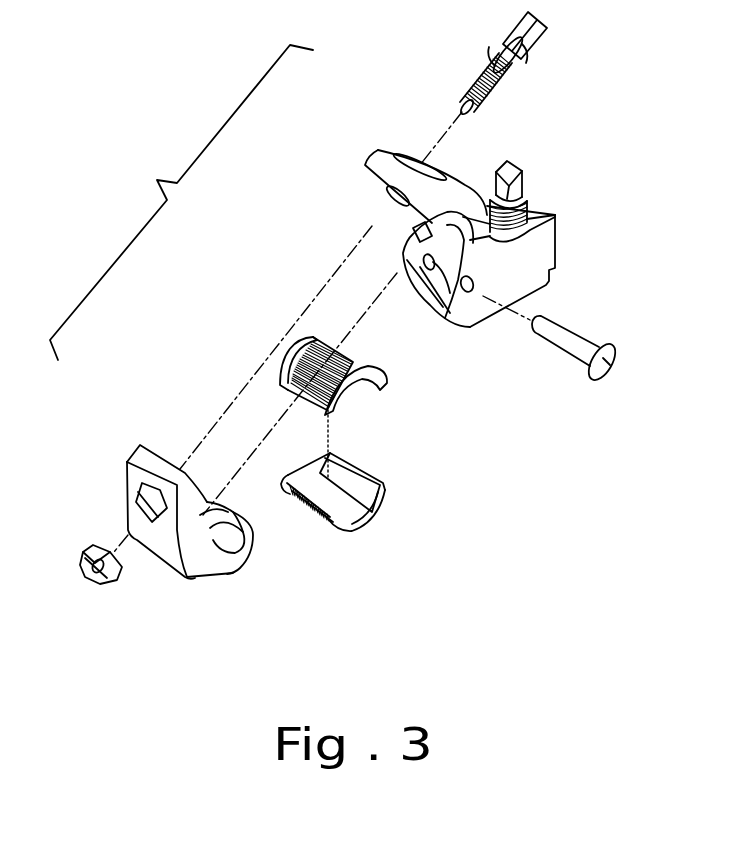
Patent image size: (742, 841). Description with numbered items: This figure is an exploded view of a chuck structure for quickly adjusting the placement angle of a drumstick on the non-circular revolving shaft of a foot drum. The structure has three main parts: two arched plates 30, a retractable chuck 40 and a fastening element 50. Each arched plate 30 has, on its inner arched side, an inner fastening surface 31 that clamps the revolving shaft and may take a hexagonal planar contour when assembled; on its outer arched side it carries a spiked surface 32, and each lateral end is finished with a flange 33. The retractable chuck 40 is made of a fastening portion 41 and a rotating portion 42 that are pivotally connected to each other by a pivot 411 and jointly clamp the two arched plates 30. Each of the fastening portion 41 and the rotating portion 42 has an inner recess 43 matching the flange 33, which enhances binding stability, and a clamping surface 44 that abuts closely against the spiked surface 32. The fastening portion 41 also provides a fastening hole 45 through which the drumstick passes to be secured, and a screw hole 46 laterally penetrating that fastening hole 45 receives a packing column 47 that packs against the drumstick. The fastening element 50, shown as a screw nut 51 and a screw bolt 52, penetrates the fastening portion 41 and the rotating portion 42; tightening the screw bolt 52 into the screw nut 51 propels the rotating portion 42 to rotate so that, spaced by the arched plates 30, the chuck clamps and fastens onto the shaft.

The arched plates 30 is at (336, 450).
The inner fastening surface 31 is at (343, 480).
The spiked surface 32 is at (343, 347).
The flange 33 is at (300, 337).
The retractable chuck 40 is at (562, 256).
The fastening portion 41 is at (480, 310).
The pivot 411 is at (614, 368).
The rotating portion 42 is at (193, 565).
The inner recess 43 is at (528, 226).
The clamping surface 44 is at (427, 218).
The fastening hole 45 is at (443, 321).
The screw hole 46 is at (550, 233).
The packing column 47 is at (510, 162).
The fastening element 50 is at (181, 202).
The screw nut 51 is at (93, 543).
The screw bolt 52 is at (474, 80).